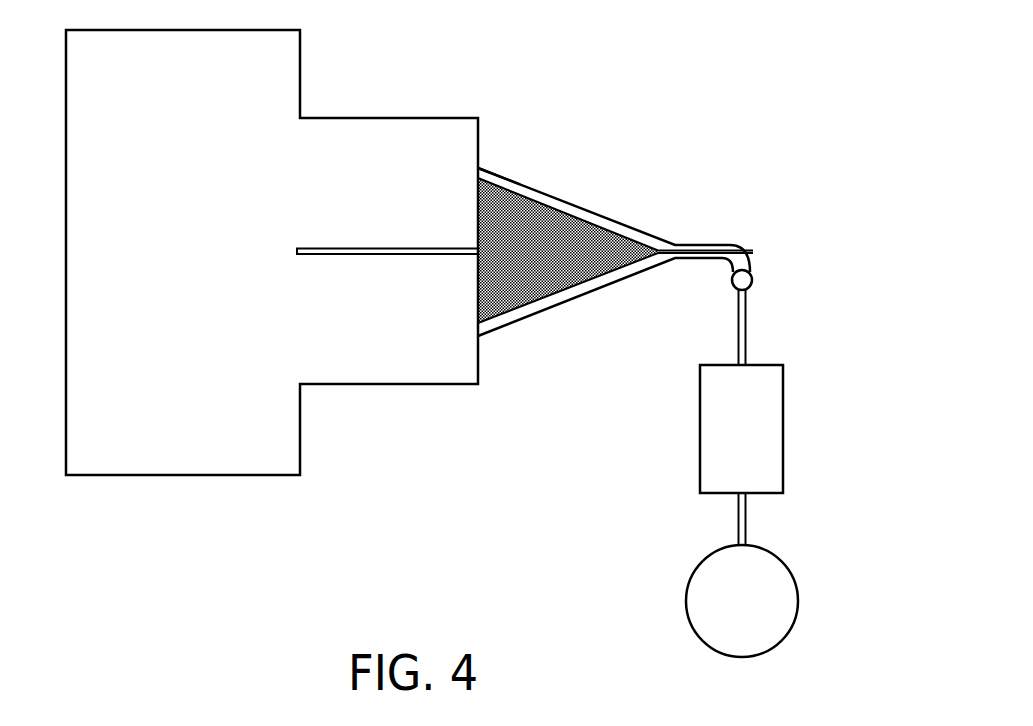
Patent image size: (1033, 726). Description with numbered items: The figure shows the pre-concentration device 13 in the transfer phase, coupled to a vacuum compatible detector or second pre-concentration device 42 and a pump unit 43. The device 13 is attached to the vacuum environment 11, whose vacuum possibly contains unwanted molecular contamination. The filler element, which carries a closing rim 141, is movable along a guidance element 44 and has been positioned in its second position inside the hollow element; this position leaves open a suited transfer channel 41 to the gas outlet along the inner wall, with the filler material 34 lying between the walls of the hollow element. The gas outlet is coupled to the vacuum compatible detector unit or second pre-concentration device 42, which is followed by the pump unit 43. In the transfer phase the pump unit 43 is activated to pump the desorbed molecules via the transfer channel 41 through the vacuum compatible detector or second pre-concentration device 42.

The vacuum environment 11 is at (190, 266).
The pre-concentration device 13 is at (683, 96).
The filter / absorbent material 34 is at (487, 282).
The transfer channel 41 is at (585, 214).
The second pre-concentration device 42 is at (700, 430).
The pump unit 43 is at (686, 600).
The guidance element 44 is at (332, 248).
The closing rim 141 is at (476, 170).